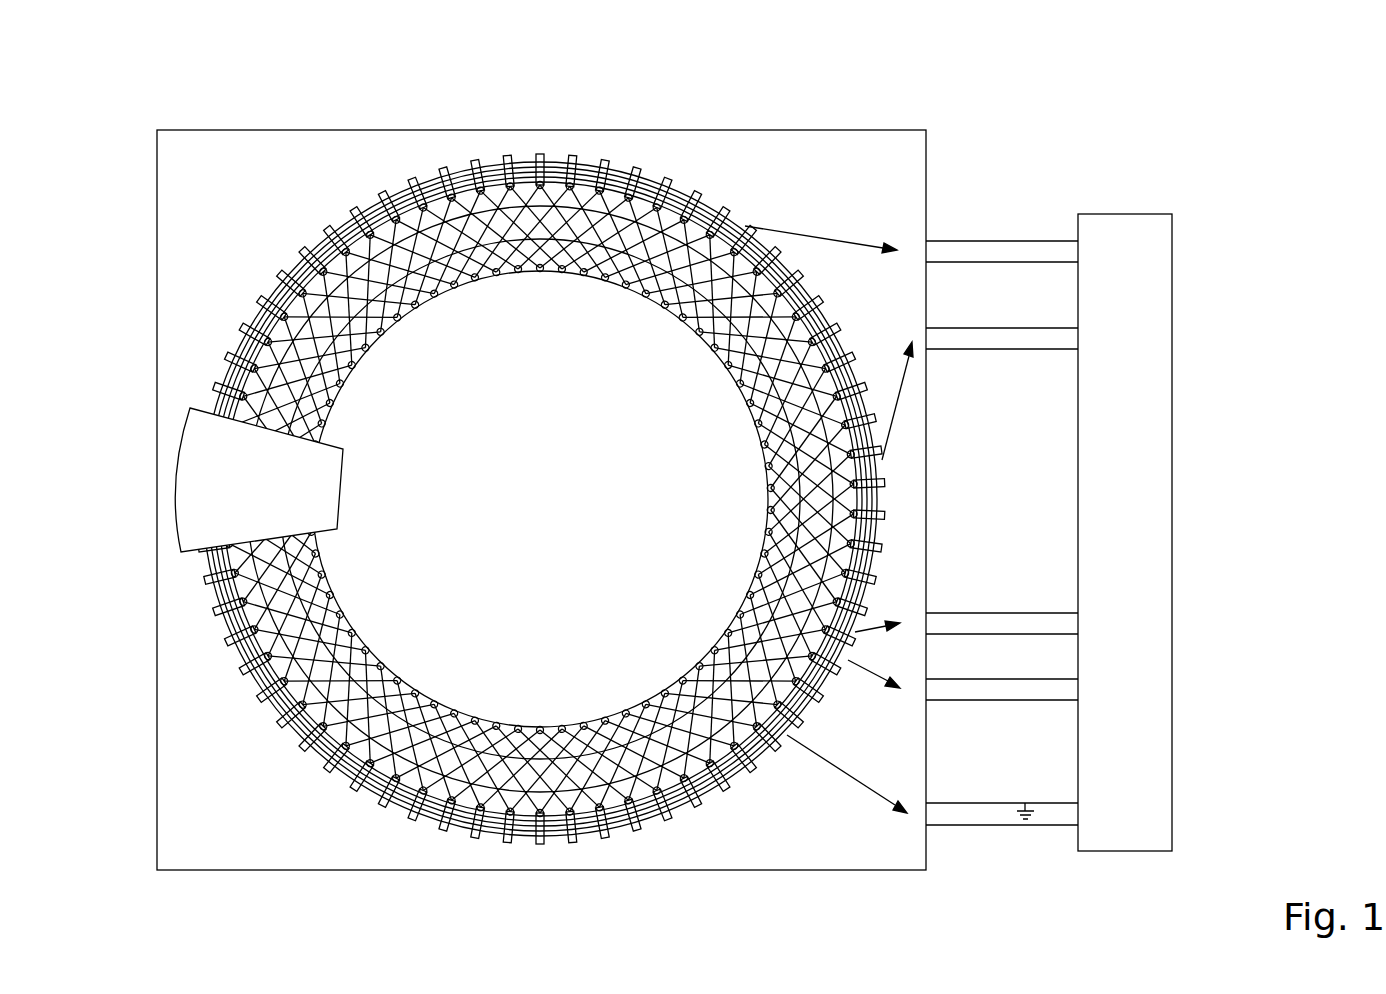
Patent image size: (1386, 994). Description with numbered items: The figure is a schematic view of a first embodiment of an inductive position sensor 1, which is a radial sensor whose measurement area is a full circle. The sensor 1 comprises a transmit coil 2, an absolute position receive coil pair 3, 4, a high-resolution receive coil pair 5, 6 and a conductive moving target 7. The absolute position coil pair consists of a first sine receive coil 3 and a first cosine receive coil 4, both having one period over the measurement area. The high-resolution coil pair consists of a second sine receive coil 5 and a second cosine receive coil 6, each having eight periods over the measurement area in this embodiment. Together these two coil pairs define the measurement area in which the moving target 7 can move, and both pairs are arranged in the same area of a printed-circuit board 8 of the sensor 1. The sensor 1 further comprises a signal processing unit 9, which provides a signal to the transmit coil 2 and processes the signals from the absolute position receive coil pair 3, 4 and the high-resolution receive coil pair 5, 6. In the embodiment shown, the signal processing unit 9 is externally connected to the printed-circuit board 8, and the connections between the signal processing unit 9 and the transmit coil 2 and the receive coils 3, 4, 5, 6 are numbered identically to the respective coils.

The inductive position sensor 1 is at (903, 98).
The transmit coil 2 is at (870, 525).
The first sine receive coil 3 is at (402, 310).
The first cosine receive coil 4 is at (448, 263).
The second sine receive coil 5 is at (522, 237).
The second cosine receive coil 6 is at (538, 238).
The conductive moving target 7 is at (303, 498).
The printed-circuit board 8 is at (897, 167).
The signal processing unit 9 is at (1150, 768).